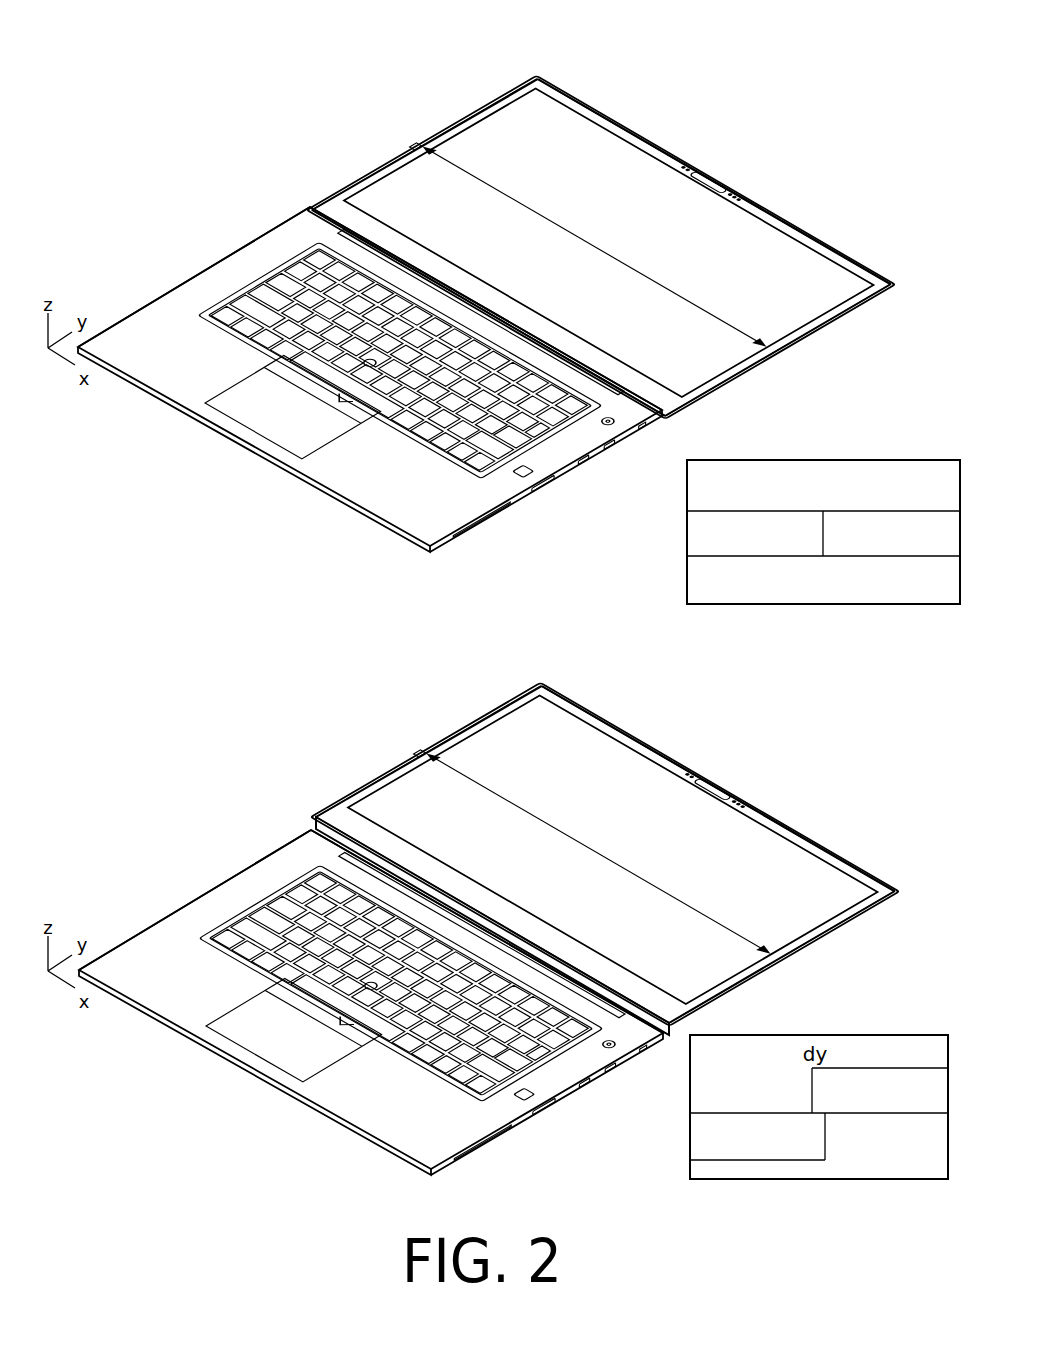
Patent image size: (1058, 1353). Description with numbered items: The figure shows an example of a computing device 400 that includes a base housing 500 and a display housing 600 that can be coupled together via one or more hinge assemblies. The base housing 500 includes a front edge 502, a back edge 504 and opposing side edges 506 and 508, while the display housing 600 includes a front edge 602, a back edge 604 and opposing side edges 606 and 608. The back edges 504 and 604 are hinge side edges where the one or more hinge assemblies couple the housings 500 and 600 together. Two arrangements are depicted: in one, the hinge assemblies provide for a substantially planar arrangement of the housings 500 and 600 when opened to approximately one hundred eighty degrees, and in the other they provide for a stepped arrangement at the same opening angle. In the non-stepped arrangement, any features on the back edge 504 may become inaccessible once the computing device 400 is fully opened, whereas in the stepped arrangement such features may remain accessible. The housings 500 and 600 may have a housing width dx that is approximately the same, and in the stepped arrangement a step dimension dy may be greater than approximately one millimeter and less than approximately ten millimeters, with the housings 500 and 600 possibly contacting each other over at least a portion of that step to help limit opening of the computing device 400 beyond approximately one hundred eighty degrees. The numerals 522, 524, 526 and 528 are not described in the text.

The computing device 400 is at (766, 50).
The base housing 500 is at (215, 229).
The front edge 502 is at (345, 508).
The back edge 504 is at (310, 206).
The side edge 506 is at (172, 290).
The side edge 508 is at (536, 490).
The front edge of base housing 522 is at (345, 1131).
The rear edge of base housing 524 is at (311, 829).
The left side edge of base housing 526 is at (172, 913).
The right side edge of base housing 528 is at (535, 1110).
The display housing 600 is at (371, 107).
The front edge 602 is at (644, 137).
The back edge 604 is at (604, 390).
The side edge 606 is at (490, 104).
The side edge 608 is at (762, 370).